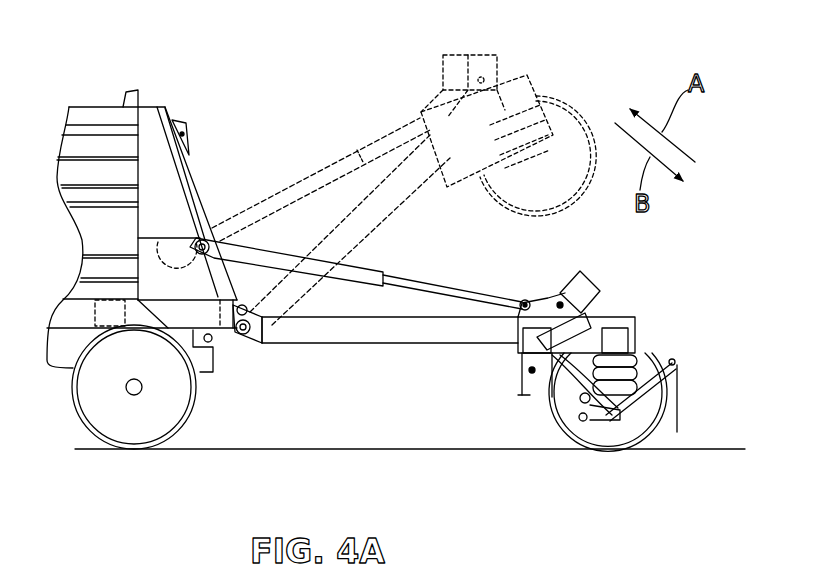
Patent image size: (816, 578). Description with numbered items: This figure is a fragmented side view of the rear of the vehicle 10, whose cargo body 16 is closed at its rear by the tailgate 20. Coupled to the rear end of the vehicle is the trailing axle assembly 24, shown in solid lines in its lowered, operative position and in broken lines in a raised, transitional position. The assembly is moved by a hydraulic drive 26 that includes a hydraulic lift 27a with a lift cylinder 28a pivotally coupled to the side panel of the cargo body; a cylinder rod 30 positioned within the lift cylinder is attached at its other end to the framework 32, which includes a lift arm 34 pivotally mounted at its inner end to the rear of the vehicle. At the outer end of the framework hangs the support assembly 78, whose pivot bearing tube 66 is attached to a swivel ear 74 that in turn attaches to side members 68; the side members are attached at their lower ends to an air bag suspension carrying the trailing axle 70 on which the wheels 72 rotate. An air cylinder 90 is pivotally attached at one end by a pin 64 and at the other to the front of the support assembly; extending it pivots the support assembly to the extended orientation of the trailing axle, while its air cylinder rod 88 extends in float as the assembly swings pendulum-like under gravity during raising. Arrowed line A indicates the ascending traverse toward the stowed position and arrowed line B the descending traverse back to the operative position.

The vehicle 10 is at (138, 235).
The cargo body 16 is at (101, 106).
The tailgate 20 is at (197, 193).
The trailing axle assembly 24 is at (598, 256).
The hydraulic drive 26 is at (322, 150).
The first hydraulic lift 27a is at (288, 248).
The lift cylinder 28a is at (363, 267).
The cylinder rod 30 is at (447, 285).
The framework 32 is at (375, 365).
The lift arm 34 is at (318, 337).
The pin 64 is at (607, 315).
The pivot bearing tube 66 is at (453, 87).
The side members 68 is at (560, 380).
The trailing axle 70 is at (612, 410).
The wheels 72 is at (595, 263).
The swivel ear 74 is at (554, 298).
The support assembly 78 is at (647, 326).
The air cylinder rod 88 is at (540, 358).
The air cylinder 90 is at (520, 327).